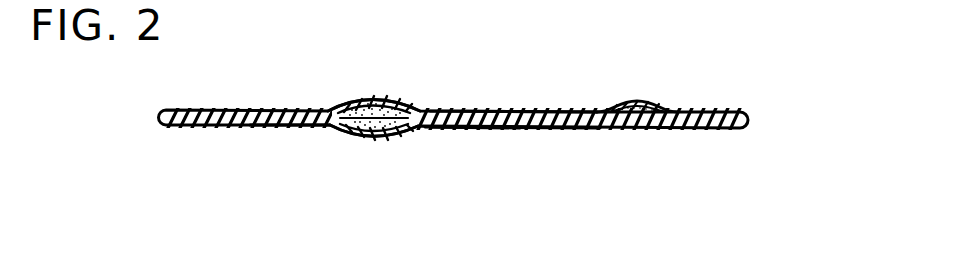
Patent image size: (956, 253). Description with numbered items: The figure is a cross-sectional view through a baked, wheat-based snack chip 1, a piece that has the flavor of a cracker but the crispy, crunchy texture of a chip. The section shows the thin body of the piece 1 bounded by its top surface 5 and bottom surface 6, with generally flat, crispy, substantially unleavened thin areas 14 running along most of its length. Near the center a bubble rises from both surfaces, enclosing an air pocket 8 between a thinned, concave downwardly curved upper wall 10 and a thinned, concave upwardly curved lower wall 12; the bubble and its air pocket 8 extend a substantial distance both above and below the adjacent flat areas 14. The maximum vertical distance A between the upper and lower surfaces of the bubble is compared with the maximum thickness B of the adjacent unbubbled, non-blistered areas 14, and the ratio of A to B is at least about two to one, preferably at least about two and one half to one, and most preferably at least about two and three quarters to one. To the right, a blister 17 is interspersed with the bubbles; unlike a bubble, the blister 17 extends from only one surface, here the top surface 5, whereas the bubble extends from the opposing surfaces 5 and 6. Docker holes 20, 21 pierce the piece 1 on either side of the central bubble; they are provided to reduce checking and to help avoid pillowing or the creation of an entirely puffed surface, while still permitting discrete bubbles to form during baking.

The snack chip 1 is at (712, 156).
The top surface 5 is at (562, 113).
The bottom surface 6 is at (565, 130).
The air pocket 8 is at (357, 98).
The upper wall 10 is at (403, 97).
The lower wall 12 is at (397, 143).
The thin area 14 is at (305, 107).
The blister 17 is at (637, 101).
The docker hole 20 is at (284, 128).
The docker hole 21 is at (483, 131).
The maximum vertical distance A is at (375, 190).
The maximum thickness B is at (457, 190).